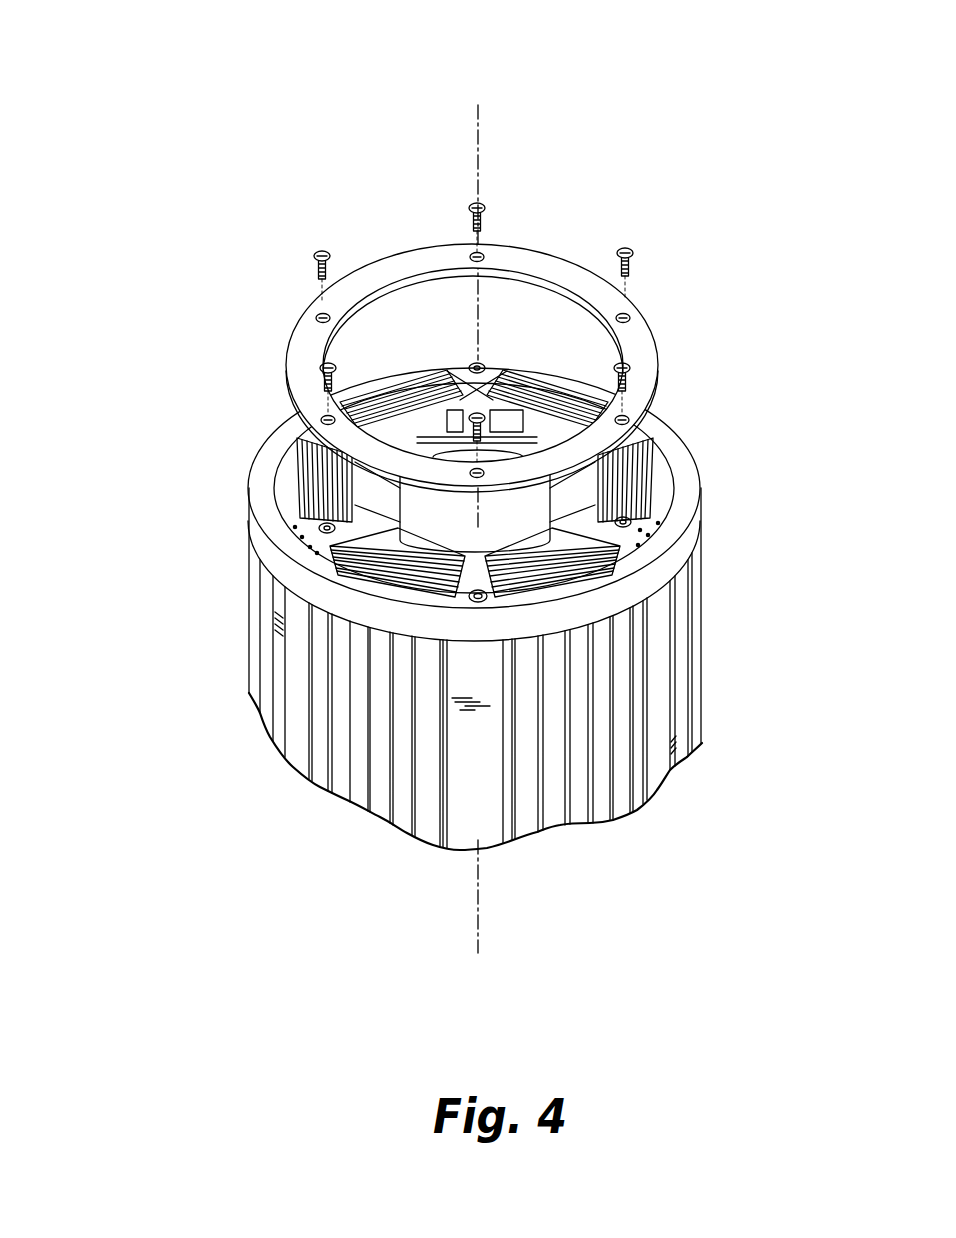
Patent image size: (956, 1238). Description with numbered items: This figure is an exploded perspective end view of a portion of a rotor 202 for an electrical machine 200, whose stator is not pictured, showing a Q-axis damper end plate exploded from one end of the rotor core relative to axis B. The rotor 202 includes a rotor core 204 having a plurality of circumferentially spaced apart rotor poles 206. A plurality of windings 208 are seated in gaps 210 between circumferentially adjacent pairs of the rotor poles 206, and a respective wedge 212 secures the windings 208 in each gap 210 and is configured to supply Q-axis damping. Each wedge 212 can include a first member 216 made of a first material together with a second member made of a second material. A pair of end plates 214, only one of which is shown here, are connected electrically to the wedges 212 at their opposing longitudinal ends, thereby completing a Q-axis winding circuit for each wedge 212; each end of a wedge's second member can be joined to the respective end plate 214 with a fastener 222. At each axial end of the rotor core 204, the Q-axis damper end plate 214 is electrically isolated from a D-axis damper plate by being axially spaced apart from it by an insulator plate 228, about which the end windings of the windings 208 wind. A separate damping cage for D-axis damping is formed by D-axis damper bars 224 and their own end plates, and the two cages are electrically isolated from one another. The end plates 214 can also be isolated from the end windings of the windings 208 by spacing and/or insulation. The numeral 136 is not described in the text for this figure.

The electrical machine 200 is at (196, 167).
The rotor 202 is at (719, 581).
The rotor core 204 is at (698, 673).
The rotor poles 206 is at (250, 643).
The windings 208 is at (403, 400).
The gaps 210 is at (297, 742).
The wedge 212 is at (477, 362).
The end plates 214 is at (358, 290).
The first member 216 is at (467, 819).
The fastener 222 is at (485, 205).
The D-axis damper bars 224 is at (413, 822).
The insulator plate 228 is at (670, 503).
The stator support 136 is at (362, 372).